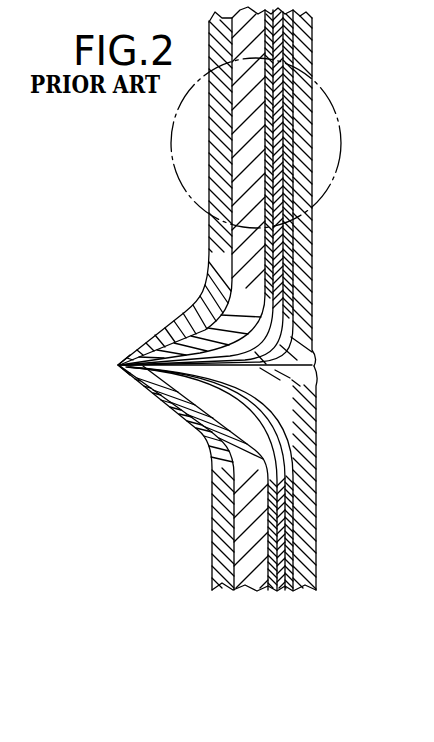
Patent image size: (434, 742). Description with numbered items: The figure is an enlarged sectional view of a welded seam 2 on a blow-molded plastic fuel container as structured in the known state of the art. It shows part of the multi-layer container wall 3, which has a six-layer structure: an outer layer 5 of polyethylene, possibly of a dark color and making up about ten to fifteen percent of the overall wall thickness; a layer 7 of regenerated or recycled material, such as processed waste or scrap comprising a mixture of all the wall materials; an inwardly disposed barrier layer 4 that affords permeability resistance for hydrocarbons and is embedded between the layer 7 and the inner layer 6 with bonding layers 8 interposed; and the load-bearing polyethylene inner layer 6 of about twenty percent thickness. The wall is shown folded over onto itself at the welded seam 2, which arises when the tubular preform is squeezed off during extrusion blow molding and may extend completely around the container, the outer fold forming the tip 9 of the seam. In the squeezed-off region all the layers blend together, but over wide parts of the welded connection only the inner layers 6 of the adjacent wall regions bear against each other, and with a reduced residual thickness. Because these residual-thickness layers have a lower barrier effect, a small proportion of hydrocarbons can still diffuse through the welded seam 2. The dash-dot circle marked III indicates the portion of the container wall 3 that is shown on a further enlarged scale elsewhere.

The welded seam 2 is at (147, 310).
The container wall 3 is at (313, 44).
The barrier layer 4 is at (279, 590).
The outer layer 5 is at (212, 531).
The inner layer 6 is at (316, 518).
The layer of regenerated or recycled material 7 is at (248, 551).
The adhesive layer 8 is at (266, 583).
The fold edge 9 is at (118, 365).
The detail region III is at (172, 162).